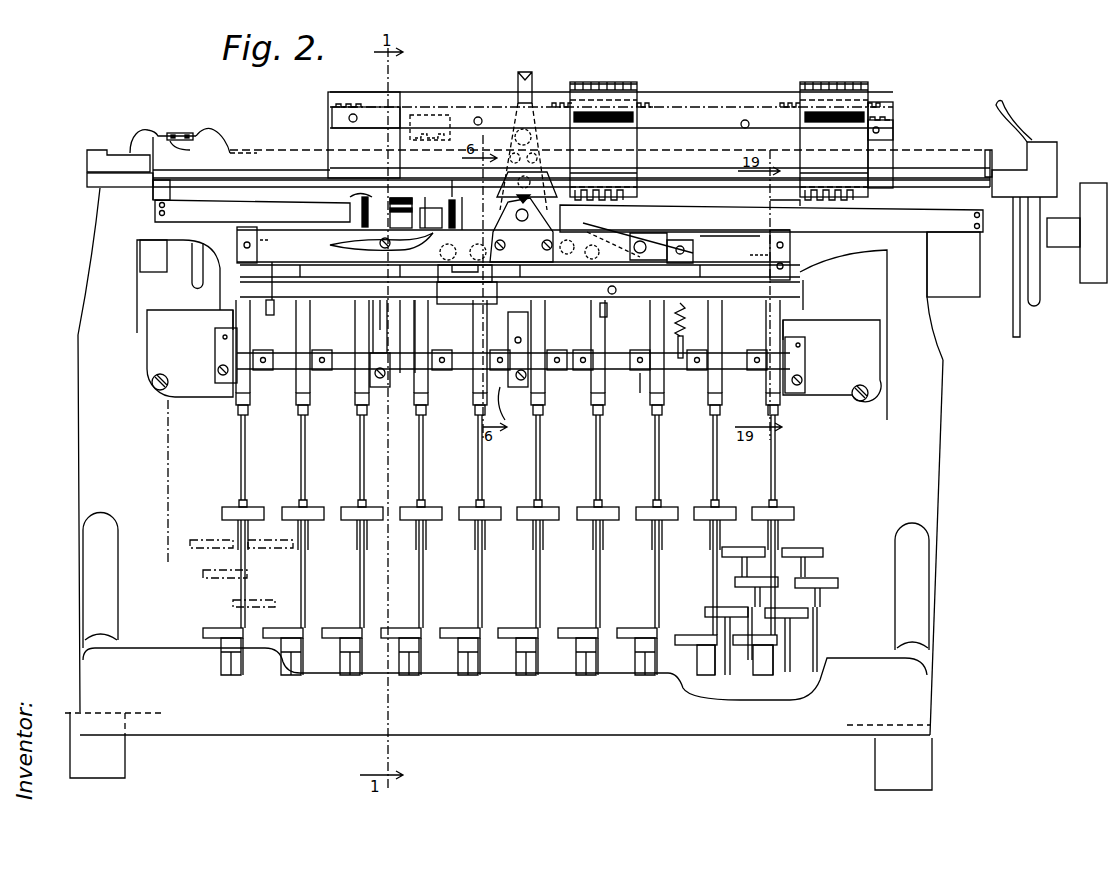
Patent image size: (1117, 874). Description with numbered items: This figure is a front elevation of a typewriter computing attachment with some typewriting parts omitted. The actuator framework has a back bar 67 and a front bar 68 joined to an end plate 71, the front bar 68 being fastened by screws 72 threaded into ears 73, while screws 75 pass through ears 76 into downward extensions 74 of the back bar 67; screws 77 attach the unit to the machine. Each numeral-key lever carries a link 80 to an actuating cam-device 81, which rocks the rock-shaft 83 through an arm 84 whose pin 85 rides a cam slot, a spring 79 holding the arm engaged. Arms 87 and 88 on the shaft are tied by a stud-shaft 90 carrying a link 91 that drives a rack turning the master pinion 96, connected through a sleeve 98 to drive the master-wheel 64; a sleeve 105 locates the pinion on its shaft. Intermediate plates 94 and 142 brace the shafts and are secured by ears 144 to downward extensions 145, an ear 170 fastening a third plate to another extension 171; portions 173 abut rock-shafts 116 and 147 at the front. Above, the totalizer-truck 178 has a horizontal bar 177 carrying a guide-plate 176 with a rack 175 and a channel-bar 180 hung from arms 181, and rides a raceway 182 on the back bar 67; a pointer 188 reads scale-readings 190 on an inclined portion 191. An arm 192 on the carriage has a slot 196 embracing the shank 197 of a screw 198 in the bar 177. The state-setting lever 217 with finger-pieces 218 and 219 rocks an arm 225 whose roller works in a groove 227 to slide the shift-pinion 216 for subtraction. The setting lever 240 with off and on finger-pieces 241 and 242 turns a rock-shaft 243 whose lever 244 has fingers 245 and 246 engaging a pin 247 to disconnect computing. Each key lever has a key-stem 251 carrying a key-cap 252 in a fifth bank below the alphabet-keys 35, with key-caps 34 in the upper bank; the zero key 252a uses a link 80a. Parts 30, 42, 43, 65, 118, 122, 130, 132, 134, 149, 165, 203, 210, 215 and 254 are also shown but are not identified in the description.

The machine frame 30 is at (504, 489).
The key-cap 34 is at (264, 511).
The alphabet-keys 35 is at (203, 574).
The frame block 42 is at (953, 264).
The operating lever / handle 43 is at (100, 165).
The master-wheel 64 is at (535, 186).
The margin stop 65 is at (627, 77).
The back bar 67 is at (274, 316).
The front bar 68 is at (513, 234).
The end plate 71 is at (232, 315).
The screws 72 is at (240, 250).
The ears 73 is at (515, 246).
The downward extensions 74 is at (198, 395).
The screws 75 is at (218, 369).
The ears 76 is at (215, 347).
The screws 77 is at (156, 390).
The spring 79 is at (684, 325).
The link 80 is at (245, 460).
The link 80a is at (777, 467).
The actuating cam-device 81 is at (730, 224).
The rock-shaft 83 is at (286, 370).
The arm 84 is at (300, 338).
The pin 85 is at (292, 308).
The arm 87 is at (380, 327).
The arm 88 is at (416, 345).
The stud-shaft 90 is at (391, 312).
The link 91 is at (450, 181).
The intermediate plate 94 is at (370, 380).
The master pinion 96 is at (426, 203).
The sleeve 98 is at (437, 214).
The sleeve 105 is at (389, 212).
The rock-shaft 116 is at (520, 293).
The plate 118 is at (467, 293).
The plate 122 is at (521, 228).
The bracket 130 is at (465, 273).
The screw 132 is at (539, 237).
The pin 134 is at (558, 214).
The intermediate plate 142 is at (519, 349).
The ears 144 is at (375, 388).
The downward extensions 145 is at (523, 419).
The rock-shaft 147 is at (748, 277).
The bar 149 is at (520, 271).
The pin 165 is at (644, 386).
The ear 170 is at (655, 393).
The downward extension 171 is at (700, 411).
The portions 173 is at (619, 294).
The rack 175 is at (333, 113).
The guide-plate 176 is at (330, 95).
The horizontal bar 177 is at (290, 152).
The totalizer-truck 178 is at (314, 131).
The channel-bar 180 is at (569, 216).
The arms 181 is at (152, 182).
The raceway 182 is at (571, 168).
The pointer 188 is at (518, 83).
The scale-readings 190 is at (612, 82).
The inclined portion 191 is at (638, 86).
The arm 192 is at (180, 133).
The slot 196 is at (186, 151).
The shank 197 is at (211, 130).
The screw 198 is at (160, 130).
The scale 203 is at (610, 122).
The bracket 210 is at (777, 222).
The bar 215 is at (467, 204).
The shift-pinion 216 is at (392, 186).
The lever 217 is at (338, 271).
The finger-piece 218 is at (345, 200).
The finger-piece 219 is at (449, 251).
The arm 225 is at (381, 237).
The groove 227 is at (359, 188).
The setting lever 240 is at (651, 233).
The off finger-piece 241 is at (638, 232).
The on finger-piece 242 is at (684, 252).
The rock-shaft 243 is at (580, 296).
The lever 244 is at (568, 272).
The finger 245 is at (568, 251).
The finger 246 is at (596, 255).
The pin 247 is at (614, 294).
The key-stem 251 is at (220, 652).
The key-cap 252 is at (215, 628).
The zero key 252a is at (752, 660).
The key 254 is at (345, 667).